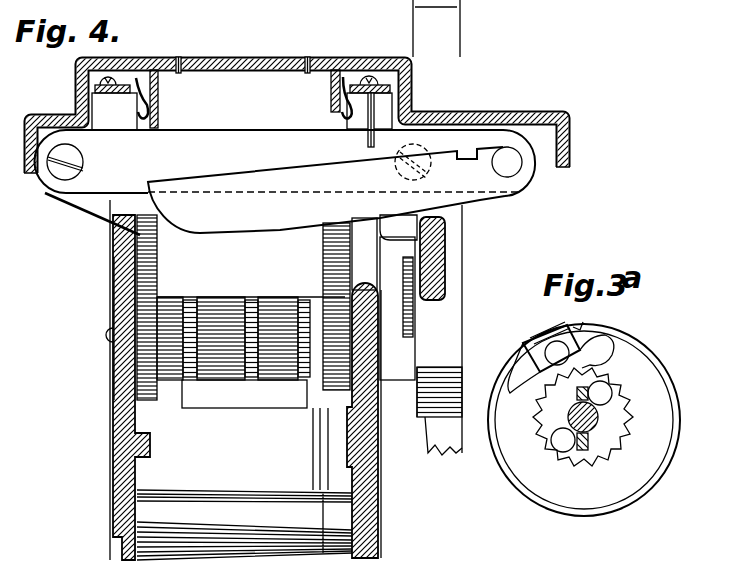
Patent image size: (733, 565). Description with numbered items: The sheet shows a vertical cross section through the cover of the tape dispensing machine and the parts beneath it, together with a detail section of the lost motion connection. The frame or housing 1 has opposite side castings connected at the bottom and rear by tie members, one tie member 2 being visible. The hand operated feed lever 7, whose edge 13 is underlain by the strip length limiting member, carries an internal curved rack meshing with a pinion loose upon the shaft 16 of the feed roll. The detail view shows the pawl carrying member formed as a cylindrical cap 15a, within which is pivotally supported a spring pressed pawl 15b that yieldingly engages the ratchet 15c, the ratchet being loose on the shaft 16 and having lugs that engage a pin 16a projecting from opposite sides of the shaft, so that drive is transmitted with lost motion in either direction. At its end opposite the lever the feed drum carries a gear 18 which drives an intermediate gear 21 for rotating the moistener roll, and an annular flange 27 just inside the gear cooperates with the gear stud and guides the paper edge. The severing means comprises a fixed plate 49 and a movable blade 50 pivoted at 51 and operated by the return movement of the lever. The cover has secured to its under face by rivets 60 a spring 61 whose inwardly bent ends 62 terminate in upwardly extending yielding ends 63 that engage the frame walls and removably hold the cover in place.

In FIG. 4, the frame or housing 1 is at (363, 437).
In FIG. 4, the tie member 2 is at (220, 500).
In FIG. 4, the feed lever 7 is at (447, 78).
In FIG. 4, the edge of the lever 13 is at (437, 260).
In FIG. 3A, the cylindrical cap 15a is at (635, 345).
In FIG. 3A, the spring pressed pawl 15b is at (602, 340).
In FIG. 3A, the ratchet 15c is at (580, 462).
In FIG. 3A, the shaft 16 is at (570, 410).
In FIG. 3A, the pin 16a is at (590, 445).
In FIG. 4, the gear 18 is at (120, 305).
In FIG. 4, the intermediate gear 21 is at (140, 363).
In FIG. 4, the annular flange 27 is at (162, 408).
In FIG. 4, the fixed plate 49 is at (105, 172).
In FIG. 4, the movable blade 50 is at (240, 177).
In FIG. 4, the pivot 51 is at (508, 158).
In FIG. 4, the rivets 60 is at (177, 58).
In FIG. 4, the spring 61 is at (237, 72).
In FIG. 4, the inwardly bent ends 62 is at (150, 118).
In FIG. 4, the yielding ends 63 is at (133, 97).